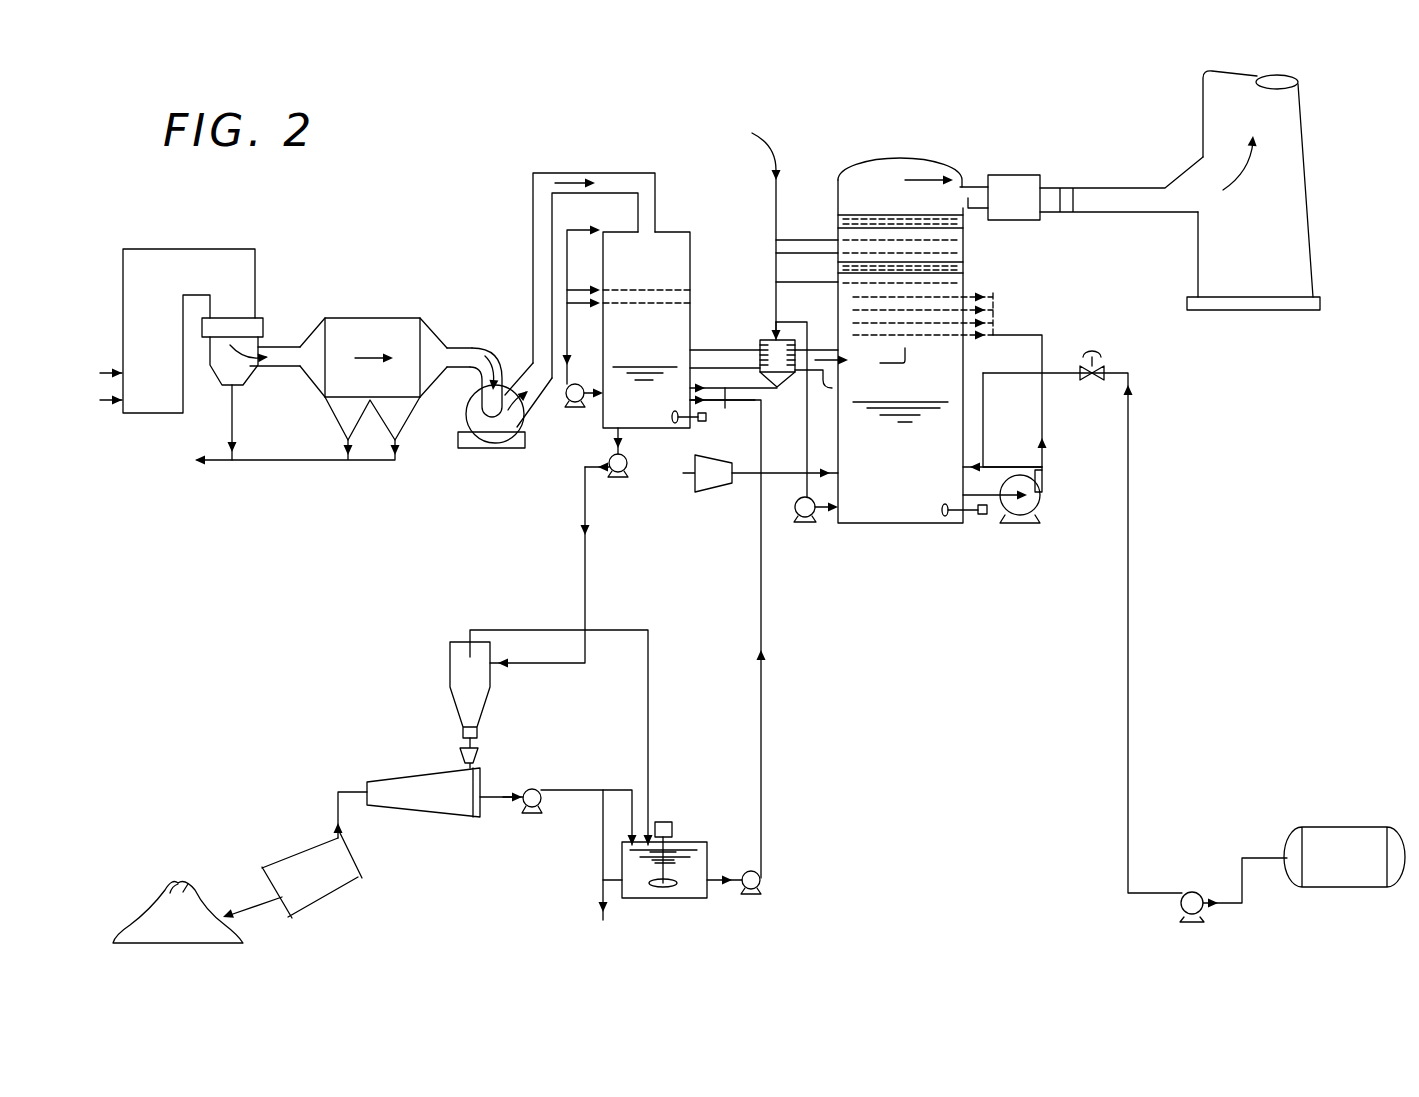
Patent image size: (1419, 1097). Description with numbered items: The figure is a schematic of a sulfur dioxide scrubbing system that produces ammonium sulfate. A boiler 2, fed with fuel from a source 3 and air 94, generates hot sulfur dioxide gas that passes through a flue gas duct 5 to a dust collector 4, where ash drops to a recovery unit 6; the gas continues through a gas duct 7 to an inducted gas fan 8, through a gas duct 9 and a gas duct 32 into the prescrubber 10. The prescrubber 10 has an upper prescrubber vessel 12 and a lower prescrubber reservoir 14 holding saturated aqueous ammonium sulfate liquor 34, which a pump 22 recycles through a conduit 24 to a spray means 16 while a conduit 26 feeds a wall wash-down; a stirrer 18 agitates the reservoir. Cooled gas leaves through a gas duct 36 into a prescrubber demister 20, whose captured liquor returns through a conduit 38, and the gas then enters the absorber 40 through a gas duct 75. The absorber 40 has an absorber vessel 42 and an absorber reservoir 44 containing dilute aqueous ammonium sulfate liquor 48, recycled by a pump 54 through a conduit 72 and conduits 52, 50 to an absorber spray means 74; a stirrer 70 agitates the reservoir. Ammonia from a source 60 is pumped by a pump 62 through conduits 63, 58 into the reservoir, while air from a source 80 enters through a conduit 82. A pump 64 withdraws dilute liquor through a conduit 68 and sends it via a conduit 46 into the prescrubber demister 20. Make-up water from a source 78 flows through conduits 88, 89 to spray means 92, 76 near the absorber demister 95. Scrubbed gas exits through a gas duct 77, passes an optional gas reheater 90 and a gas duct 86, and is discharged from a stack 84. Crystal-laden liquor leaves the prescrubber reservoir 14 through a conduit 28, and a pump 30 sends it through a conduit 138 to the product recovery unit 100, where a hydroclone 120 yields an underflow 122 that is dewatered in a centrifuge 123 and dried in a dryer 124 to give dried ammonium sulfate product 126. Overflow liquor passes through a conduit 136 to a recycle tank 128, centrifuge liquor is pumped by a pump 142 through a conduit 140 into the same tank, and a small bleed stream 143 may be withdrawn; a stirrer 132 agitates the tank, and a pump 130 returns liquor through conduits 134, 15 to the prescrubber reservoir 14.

The boiler 2 is at (196, 279).
The fuel source 3 is at (100, 373).
The air 94 is at (100, 400).
The dust collector 4 is at (384, 342).
The flue gas duct 5 is at (278, 367).
The recovery unit 6 is at (290, 460).
The gas duct 7 is at (466, 352).
The inducted gas fan 8 is at (493, 440).
The gas duct 9 is at (533, 288).
The prescrubber 10 is at (680, 218).
The prescrubber vessel 12 is at (606, 262).
The prescrubber reservoir 14 is at (606, 409).
The conduit 15 is at (768, 422).
The spray means 16 is at (680, 270).
The stirrer 18 is at (706, 421).
The prescrubber demister 20 is at (752, 336).
The pump 22 is at (583, 384).
The conduit 24 is at (567, 312).
The conduit 26 is at (585, 222).
The conduit 28 is at (624, 450).
The pump 30 is at (608, 460).
The gas duct 32 is at (620, 177).
The saturated aqueous ammonium sulfate liquor 34 is at (635, 364).
The gas duct 36 is at (708, 350).
The conduit 38 is at (718, 420).
The absorber 40 is at (880, 137).
The absorber vessel 42 is at (843, 196).
The absorber reservoir 44 is at (838, 440).
The conduit 46 is at (780, 480).
The dilute aqueous ammonium sulfate liquor 48 is at (905, 414).
The conduit 50 is at (998, 307).
The conduit 52 is at (1043, 405).
The pump 54 is at (1043, 493).
The conduit 58 is at (984, 437).
The ammonia source 60 is at (1334, 810).
The pump 62 is at (1192, 892).
The conduit 63 is at (1128, 485).
The pump 64 is at (800, 516).
The conduit 68 is at (838, 494).
The stirrer 70 is at (983, 514).
The conduit 72 is at (963, 480).
The absorber spray means 74 is at (922, 343).
The gas duct 75 is at (836, 388).
The spray means 76 is at (948, 250).
The gas duct 77 is at (973, 218).
The water source 78 is at (772, 300).
The oxygen source 80 is at (707, 505).
The conduit 82 is at (742, 480).
The stack 84 is at (1195, 132).
The gas duct 86 is at (1125, 205).
The conduit 88 is at (822, 281).
The conduit 89 is at (812, 238).
The gas reheater 90 is at (1008, 195).
The spray means 92 is at (942, 288).
The absorber demister 95 is at (928, 220).
The product recovery unit 100 is at (345, 670).
The hydroclone 120 is at (488, 678).
The underflow 122 is at (452, 762).
The centrifuge 123 is at (427, 812).
The dryer 124 is at (318, 884).
The dried ammonium sulfate product 126 is at (152, 902).
The recycle tank 128 is at (597, 873).
The pump 130 is at (763, 880).
The stirrer 132 is at (670, 895).
The conduit 134 is at (763, 722).
The conduit 136 is at (652, 703).
The conduit 138 is at (585, 572).
The conduit 140 is at (590, 789).
The pump 142 is at (542, 807).
The bleed stream 143 is at (602, 852).